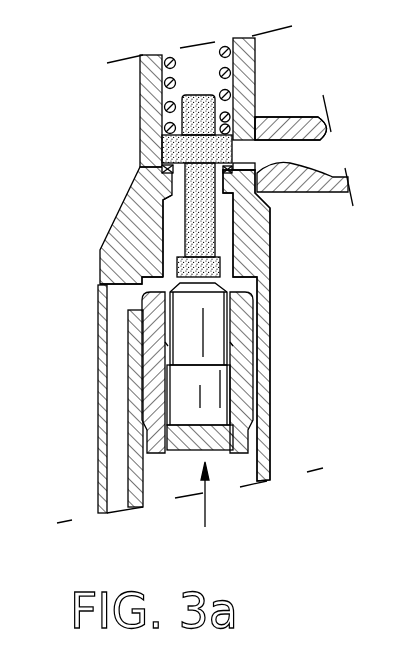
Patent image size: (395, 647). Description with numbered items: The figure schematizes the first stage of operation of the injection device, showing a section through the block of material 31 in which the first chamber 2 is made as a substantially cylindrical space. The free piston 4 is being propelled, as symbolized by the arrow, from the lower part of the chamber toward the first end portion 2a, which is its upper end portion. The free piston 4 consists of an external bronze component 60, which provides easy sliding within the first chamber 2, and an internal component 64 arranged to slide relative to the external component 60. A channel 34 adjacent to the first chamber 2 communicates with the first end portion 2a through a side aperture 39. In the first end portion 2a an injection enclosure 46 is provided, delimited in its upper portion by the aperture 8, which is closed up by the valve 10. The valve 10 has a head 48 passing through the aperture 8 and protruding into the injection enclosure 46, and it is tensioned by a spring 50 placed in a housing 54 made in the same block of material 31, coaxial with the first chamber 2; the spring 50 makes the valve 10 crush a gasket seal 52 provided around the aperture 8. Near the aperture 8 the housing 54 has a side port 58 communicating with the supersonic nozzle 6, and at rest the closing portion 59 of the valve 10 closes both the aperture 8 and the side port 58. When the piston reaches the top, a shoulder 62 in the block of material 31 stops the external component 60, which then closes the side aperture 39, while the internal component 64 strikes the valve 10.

The first chamber 2 is at (266, 482).
The first end portion of the first chamber 2a is at (288, 278).
The free piston 4 is at (223, 462).
The supersonic nozzle 6 is at (333, 130).
The aperture 8 is at (170, 192).
The valve 10 is at (187, 156).
The block of material 31 is at (283, 430).
The channel 34 is at (118, 477).
The side aperture 39 is at (135, 284).
The injection enclosure 46 is at (163, 250).
The head 48 is at (163, 250).
The spring 50 is at (170, 60).
The gasket seal 52 is at (262, 170).
The housing 54 is at (140, 77).
The side port 58 is at (247, 141).
The closing portion 59 is at (140, 143).
The external bronze component 60 is at (148, 390).
The shoulder 62 is at (255, 308).
The internal component 64 is at (213, 343).